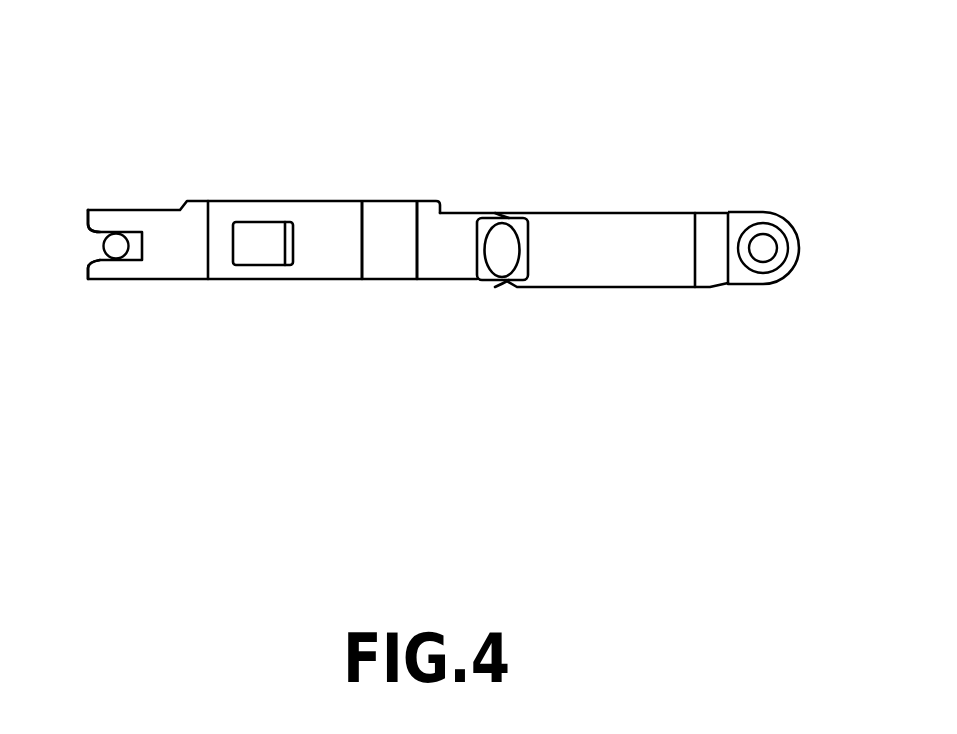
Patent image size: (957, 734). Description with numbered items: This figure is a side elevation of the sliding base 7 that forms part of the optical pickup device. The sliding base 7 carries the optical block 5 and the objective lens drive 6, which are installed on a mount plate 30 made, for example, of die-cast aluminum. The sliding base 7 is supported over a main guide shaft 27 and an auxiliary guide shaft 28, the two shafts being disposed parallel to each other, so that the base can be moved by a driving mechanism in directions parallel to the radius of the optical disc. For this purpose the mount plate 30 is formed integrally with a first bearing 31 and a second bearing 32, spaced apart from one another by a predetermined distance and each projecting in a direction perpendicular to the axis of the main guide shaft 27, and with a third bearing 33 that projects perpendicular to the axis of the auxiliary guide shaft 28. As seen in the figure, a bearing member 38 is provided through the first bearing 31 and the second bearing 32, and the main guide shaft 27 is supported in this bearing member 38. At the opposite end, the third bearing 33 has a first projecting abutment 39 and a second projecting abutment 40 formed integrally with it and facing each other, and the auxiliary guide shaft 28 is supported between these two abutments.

The optical block 5 is at (252, 188).
The objective lens drive 6 is at (565, 190).
The sliding base 7 is at (632, 232).
The main guide shaft 27 is at (768, 247).
The auxiliary guide shaft 28 is at (116, 247).
The mount plate 30 is at (400, 265).
The first bearing 31 is at (758, 212).
The second bearing 32 is at (792, 198).
The third bearing 33 is at (158, 210).
The bearing member 38 is at (762, 285).
The first projecting abutment 39 is at (103, 205).
The second projecting abutment 40 is at (118, 272).